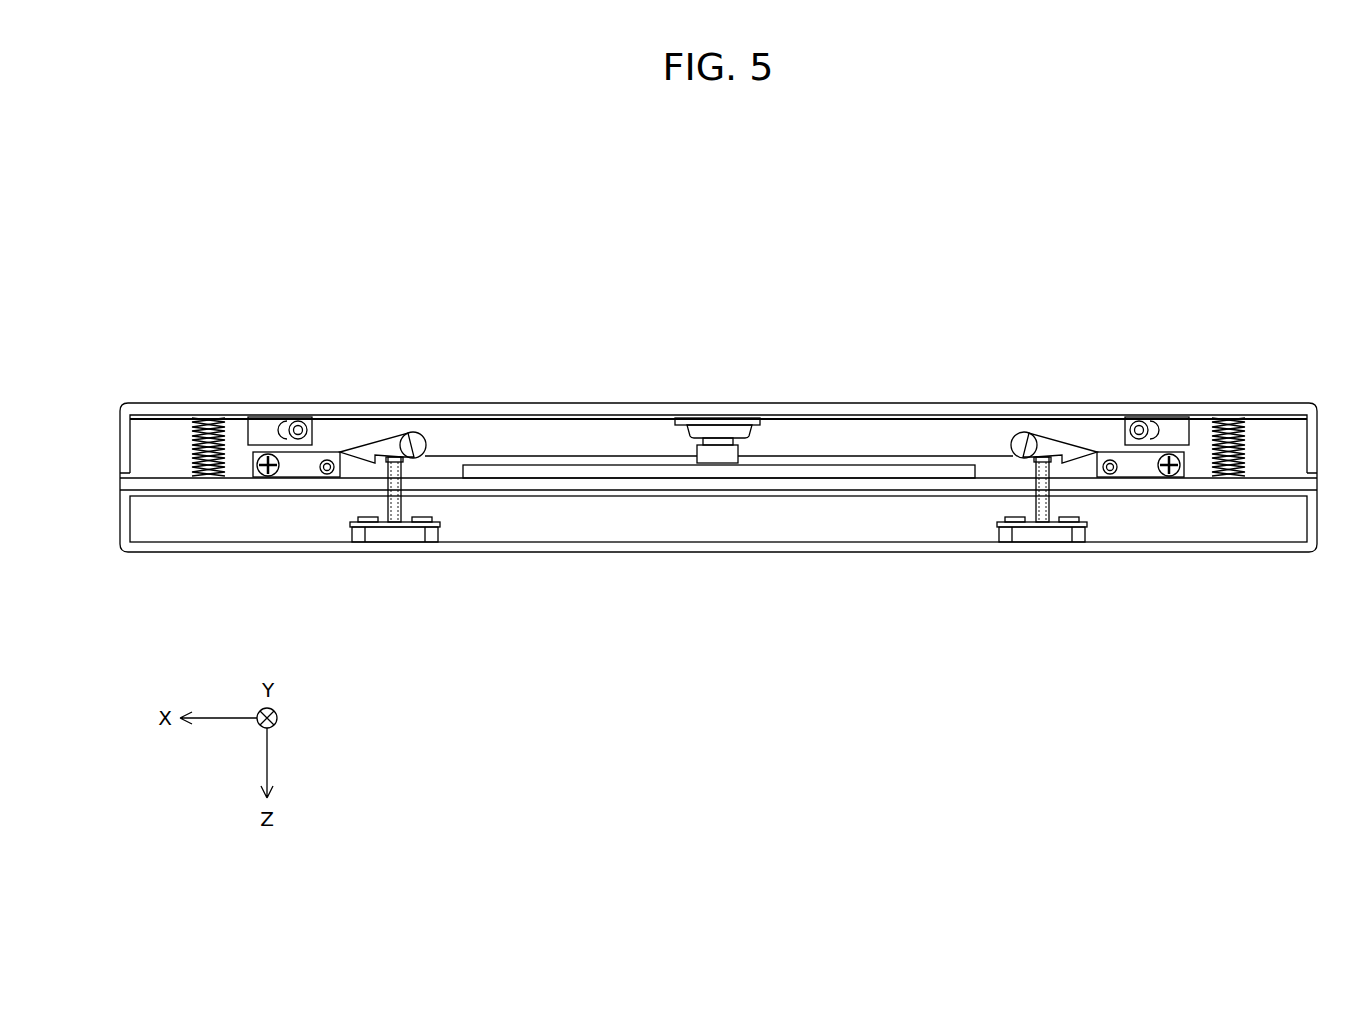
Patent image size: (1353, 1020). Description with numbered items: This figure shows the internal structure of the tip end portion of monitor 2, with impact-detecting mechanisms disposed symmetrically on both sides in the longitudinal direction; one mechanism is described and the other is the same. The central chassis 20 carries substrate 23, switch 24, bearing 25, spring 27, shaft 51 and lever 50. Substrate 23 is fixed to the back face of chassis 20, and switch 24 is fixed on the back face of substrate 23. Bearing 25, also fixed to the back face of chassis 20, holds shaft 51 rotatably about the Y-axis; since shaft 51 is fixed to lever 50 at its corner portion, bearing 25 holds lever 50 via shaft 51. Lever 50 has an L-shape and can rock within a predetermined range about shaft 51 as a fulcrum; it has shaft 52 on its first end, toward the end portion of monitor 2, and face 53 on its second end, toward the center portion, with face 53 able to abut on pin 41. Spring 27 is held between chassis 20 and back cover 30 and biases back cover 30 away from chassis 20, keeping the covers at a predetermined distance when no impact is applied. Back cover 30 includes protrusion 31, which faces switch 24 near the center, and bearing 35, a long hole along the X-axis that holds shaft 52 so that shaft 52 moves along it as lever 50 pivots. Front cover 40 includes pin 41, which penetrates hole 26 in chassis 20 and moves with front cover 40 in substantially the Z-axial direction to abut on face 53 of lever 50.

The monitor 2 is at (258, 164).
The chassis 20 is at (159, 483).
The substrate 23 is at (895, 470).
The switch 24 is at (740, 453).
The bearing 25 is at (340, 452).
The hole 26 is at (395, 480).
The spring 27 is at (240, 425).
The back cover 30 is at (607, 406).
The protrusion 31 is at (760, 419).
The bearing 35 is at (293, 422).
The front cover 40 is at (730, 548).
The pin 41 is at (402, 500).
The lever 50 is at (416, 433).
The shaft 51 is at (331, 461).
The shaft 52 is at (305, 430).
The face 53 is at (387, 437).